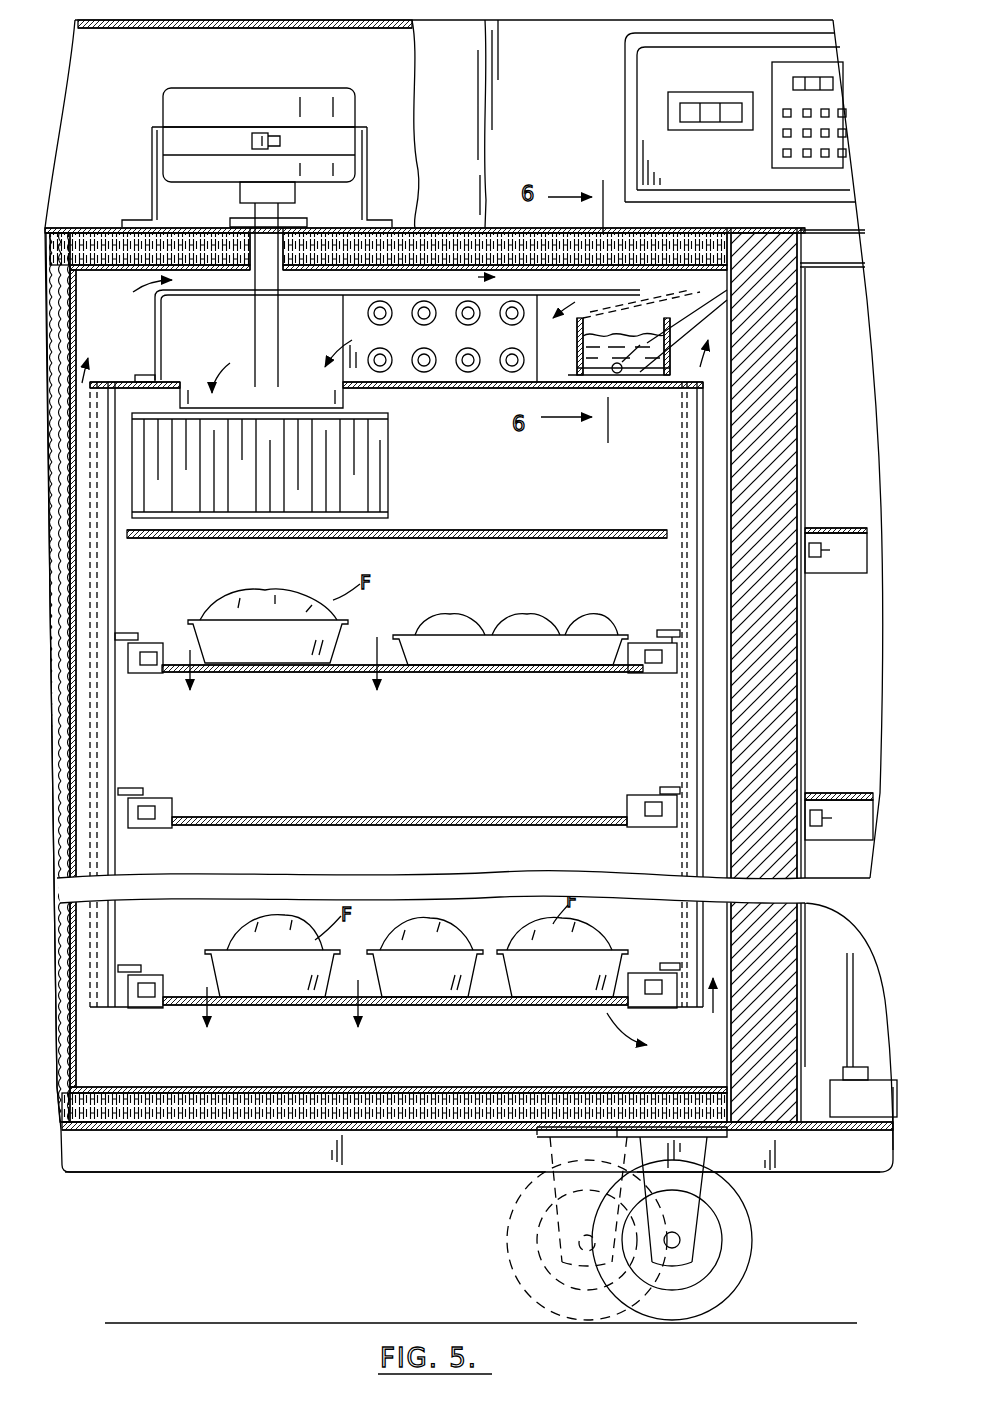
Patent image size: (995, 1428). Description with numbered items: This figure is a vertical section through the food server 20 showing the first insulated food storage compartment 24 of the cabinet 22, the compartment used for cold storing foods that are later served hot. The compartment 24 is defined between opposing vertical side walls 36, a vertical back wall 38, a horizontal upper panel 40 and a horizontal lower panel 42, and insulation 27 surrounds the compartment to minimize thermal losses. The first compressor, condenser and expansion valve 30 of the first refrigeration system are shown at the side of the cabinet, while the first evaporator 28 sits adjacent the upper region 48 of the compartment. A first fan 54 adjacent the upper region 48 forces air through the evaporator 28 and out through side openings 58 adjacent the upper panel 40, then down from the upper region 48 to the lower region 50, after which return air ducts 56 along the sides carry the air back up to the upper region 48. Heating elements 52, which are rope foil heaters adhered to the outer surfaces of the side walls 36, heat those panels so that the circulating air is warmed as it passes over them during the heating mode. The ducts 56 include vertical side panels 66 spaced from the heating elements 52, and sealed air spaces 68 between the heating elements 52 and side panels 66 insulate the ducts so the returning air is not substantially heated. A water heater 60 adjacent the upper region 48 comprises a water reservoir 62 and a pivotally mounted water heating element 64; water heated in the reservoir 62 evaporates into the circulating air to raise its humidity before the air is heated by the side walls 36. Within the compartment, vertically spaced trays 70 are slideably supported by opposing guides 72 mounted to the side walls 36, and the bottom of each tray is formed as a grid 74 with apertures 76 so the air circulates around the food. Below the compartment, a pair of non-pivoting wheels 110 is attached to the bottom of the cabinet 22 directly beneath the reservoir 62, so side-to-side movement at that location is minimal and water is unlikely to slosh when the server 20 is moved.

The food server 20 is at (46, 86).
The cabinet 22 is at (485, 228).
The first insulated food storage compartment 24 is at (265, 1050).
The insulation 27 is at (140, 262).
The first evaporator 28 is at (450, 377).
The first compressor, condenser and expansion valve 30 is at (860, 967).
The vertical side walls 36 is at (682, 483).
The vertical back wall 38 is at (328, 1070).
The horizontal upper panel 40 is at (462, 529).
The horizontal lower panel 42 is at (420, 1086).
The upper region 48 is at (513, 568).
The lower region 50 is at (168, 1058).
The heating elements 52 is at (117, 731).
The first fan 54 is at (388, 437).
The return air ducts 56 is at (398, 270).
The side openings 58 is at (673, 527).
The water heater 60 is at (690, 317).
The water reservoir 62 is at (677, 367).
The water heating element 64 is at (628, 383).
The vertical side panels 66 is at (703, 507).
The sealed air spaces 68 is at (682, 753).
The trays 70 is at (428, 676).
The guides 72 is at (140, 674).
The grid 74 is at (545, 674).
The apertures 76 is at (228, 667).
The non-pivoting wheels 110 is at (497, 1232).